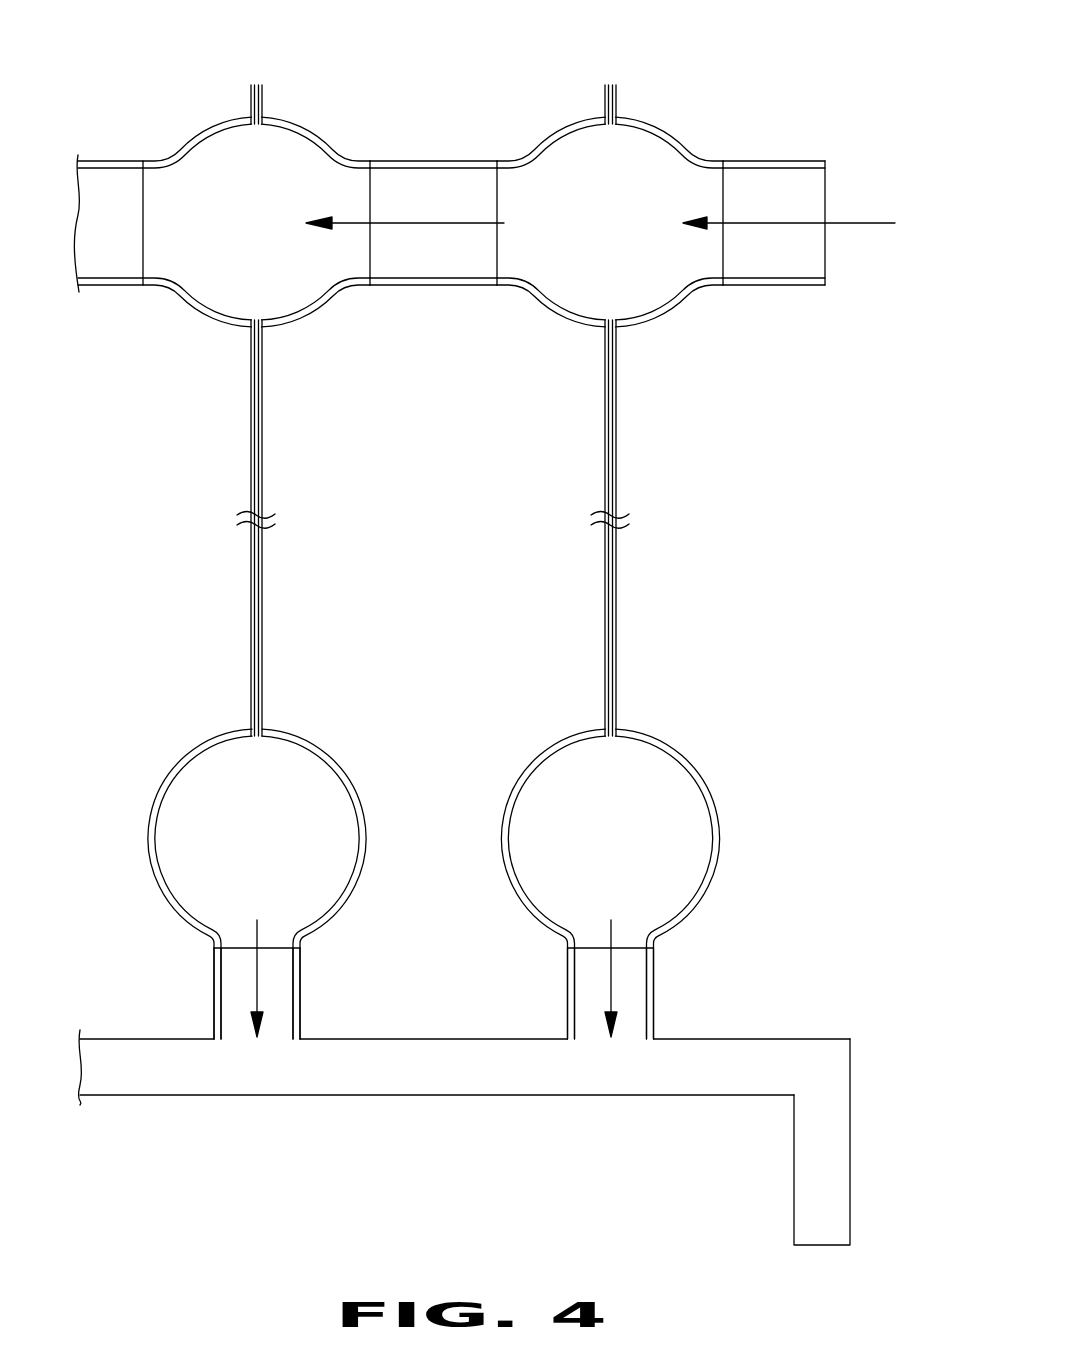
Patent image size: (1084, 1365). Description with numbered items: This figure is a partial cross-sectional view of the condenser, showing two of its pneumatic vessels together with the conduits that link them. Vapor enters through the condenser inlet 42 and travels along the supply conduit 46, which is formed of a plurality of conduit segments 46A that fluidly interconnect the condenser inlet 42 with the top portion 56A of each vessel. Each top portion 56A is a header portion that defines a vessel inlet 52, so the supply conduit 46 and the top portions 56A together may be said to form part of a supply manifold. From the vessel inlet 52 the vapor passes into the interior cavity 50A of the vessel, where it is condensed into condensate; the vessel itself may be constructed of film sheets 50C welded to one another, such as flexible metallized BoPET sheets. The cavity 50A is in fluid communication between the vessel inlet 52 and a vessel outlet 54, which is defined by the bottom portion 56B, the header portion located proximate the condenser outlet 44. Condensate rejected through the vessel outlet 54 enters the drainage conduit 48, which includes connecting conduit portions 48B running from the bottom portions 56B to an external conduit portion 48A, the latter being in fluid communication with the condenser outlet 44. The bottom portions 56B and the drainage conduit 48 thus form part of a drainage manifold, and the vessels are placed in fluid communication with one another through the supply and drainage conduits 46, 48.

The condenser inlet 42 is at (826, 160).
The condenser outlet 44 is at (850, 1245).
The supply conduit 46 is at (429, 95).
The conduit segment 46A is at (100, 286).
The drainage conduit 48 is at (433, 948).
The external conduit portion 48A is at (488, 1096).
The connecting conduit portion 48B is at (214, 1008).
The interior cavity 50A is at (281, 231).
The film sheet 50C is at (250, 606).
The vessel inlet 52 is at (369, 162).
The vessel outlet 54 is at (214, 948).
The top portion 56A is at (309, 322).
The bottom portion 56B is at (336, 752).